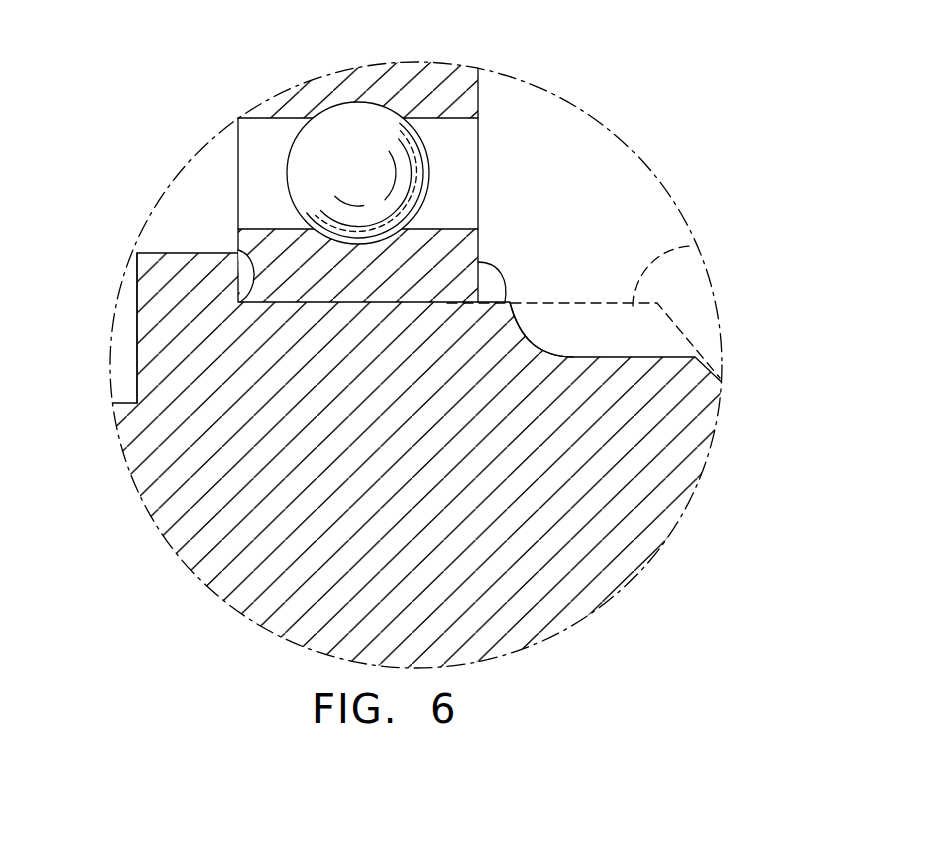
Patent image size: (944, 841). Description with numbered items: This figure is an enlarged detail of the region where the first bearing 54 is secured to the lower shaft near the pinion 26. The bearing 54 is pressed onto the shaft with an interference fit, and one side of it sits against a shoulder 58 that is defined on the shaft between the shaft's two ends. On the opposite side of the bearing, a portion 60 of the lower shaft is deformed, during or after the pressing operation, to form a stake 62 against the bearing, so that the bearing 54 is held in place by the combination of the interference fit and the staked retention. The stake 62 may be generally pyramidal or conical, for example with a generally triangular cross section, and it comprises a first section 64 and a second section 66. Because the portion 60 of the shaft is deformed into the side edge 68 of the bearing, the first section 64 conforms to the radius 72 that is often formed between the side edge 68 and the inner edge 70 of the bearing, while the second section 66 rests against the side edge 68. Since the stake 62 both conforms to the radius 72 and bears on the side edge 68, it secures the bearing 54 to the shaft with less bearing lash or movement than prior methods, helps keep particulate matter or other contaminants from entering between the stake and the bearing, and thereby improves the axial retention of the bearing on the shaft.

The pinion 26 is at (723, 374).
The first bearing 54 is at (367, 169).
The shoulder 58 is at (137, 300).
The portion of the lower shaft 60 is at (703, 240).
The stake 62 is at (505, 295).
The first section of the stake 64 is at (480, 290).
The second section of the stake 66 is at (507, 298).
The side edge of the bearing 68 is at (236, 212).
The inner edge of the bearing 70 is at (317, 303).
The radius 72 is at (248, 272).